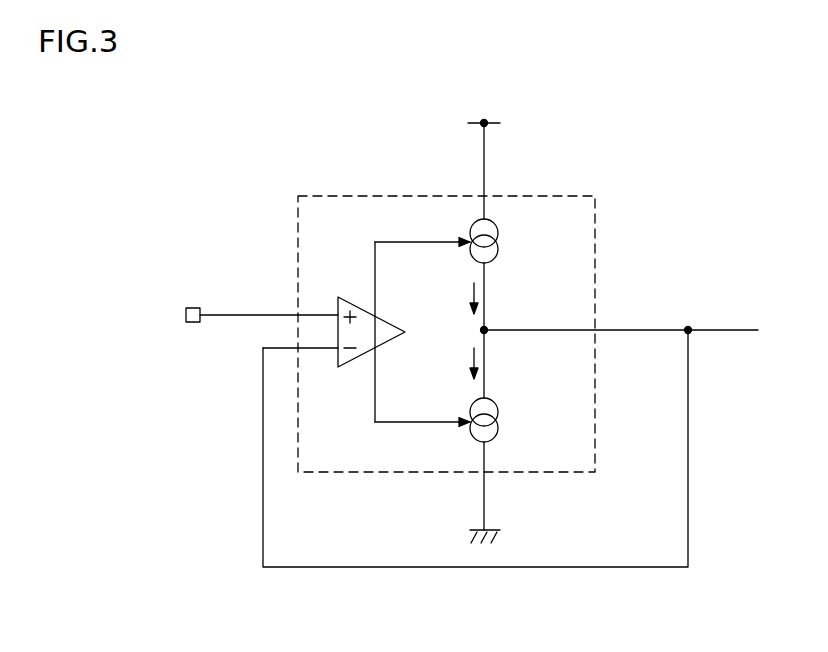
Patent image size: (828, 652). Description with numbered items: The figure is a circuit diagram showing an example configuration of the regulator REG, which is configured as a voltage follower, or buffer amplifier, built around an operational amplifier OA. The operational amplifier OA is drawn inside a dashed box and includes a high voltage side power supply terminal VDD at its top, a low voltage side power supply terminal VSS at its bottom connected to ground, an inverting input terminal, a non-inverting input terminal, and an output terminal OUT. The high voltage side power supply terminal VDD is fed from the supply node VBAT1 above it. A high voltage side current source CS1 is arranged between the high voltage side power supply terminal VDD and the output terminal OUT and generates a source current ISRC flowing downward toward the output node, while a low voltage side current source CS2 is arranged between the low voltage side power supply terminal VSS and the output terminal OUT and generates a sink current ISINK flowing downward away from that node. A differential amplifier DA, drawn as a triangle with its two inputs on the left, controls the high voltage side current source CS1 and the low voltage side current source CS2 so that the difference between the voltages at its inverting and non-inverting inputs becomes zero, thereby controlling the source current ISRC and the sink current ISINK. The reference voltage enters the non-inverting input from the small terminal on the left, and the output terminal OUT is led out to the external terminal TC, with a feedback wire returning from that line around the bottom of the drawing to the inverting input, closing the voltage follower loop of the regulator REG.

The battery voltage terminal VBAT1 is at (478, 109).
The high voltage side power supply terminal VDD is at (483, 193).
The operational amplifier OA is at (372, 473).
The high voltage side current source CS1 is at (502, 238).
The low voltage side current source CS2 is at (503, 418).
The differential amplifier DA is at (353, 297).
The source current ISRC is at (447, 298).
The sink current ISINK is at (444, 363).
The output terminal OUT is at (595, 330).
The output terminal TC is at (738, 330).
The low voltage side power supply terminal VSS is at (485, 473).
The regulator REG is at (518, 627).